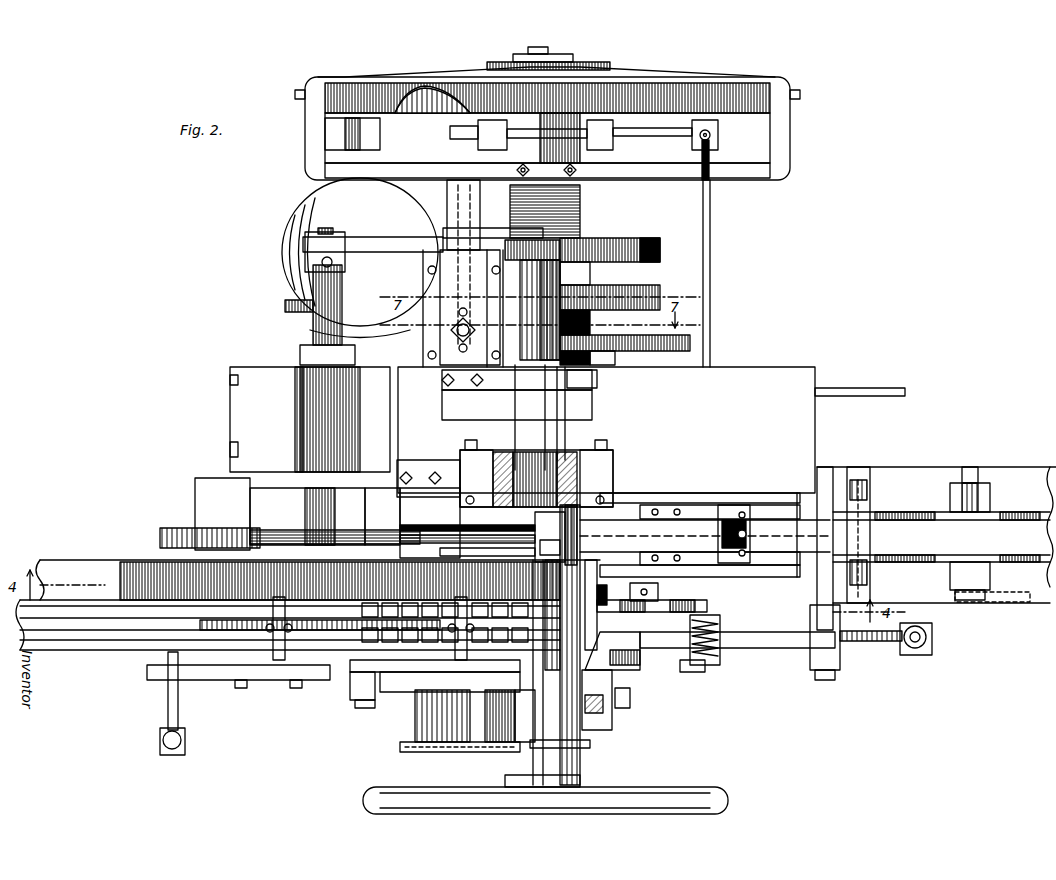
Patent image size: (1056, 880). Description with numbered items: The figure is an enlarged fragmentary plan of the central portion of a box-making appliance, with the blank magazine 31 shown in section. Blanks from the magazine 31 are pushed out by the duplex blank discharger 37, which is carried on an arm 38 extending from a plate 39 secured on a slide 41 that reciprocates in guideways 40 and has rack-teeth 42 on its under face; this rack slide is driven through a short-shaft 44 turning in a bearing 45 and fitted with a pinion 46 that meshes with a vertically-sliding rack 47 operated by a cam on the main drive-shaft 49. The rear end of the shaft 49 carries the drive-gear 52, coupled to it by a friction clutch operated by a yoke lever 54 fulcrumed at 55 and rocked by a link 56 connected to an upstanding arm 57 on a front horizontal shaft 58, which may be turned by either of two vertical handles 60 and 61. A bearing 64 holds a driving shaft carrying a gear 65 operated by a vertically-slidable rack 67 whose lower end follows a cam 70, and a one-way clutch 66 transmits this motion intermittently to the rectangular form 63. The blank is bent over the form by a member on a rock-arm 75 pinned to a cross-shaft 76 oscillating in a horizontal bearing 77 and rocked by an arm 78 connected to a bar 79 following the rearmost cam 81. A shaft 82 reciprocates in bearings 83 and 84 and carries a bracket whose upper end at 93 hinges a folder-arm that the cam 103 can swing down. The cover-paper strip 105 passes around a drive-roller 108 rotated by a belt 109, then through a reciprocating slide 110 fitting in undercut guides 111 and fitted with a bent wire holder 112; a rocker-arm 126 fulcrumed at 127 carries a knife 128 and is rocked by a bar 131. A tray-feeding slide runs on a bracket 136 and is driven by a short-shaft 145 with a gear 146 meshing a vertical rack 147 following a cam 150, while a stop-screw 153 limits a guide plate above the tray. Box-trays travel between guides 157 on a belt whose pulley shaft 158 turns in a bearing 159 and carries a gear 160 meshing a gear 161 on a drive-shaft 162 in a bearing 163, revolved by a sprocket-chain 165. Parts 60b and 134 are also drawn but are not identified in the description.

The drive-gear 52 is at (428, 108).
The fulcrum 55 is at (686, 136).
The oscillatory yoke lever 54 is at (722, 138).
The link 56 is at (712, 240).
The rack-teeth 42 is at (460, 178).
The bar 79 is at (488, 232).
The slide 41 is at (450, 220).
The arm 78 is at (384, 240).
The cross-shaft 76 is at (312, 325).
The pinion 46 is at (580, 235).
The bearing 45 is at (548, 252).
The short-shaft 44 is at (538, 310).
The rearmost cam 81 is at (640, 240).
The main drive-shaft 49 is at (590, 268).
The vertically-sliding rack 47 is at (622, 297).
The bearing 64 is at (600, 322).
The gear 65 is at (585, 333).
The one-way clutch 66 is at (600, 356).
The stud 60b is at (614, 358).
The guideways 40 is at (495, 297).
The plate 39 is at (440, 342).
The horizontal bearing 77 is at (310, 419).
The arm 38 is at (578, 385).
The belt 109 is at (880, 390).
The duplex blank discharger 37 is at (505, 421).
The vertically-slidable rack 67 is at (525, 378).
The blank magazine 31 is at (575, 460).
The pivotal mounting 93 is at (458, 530).
The bearing 83 is at (205, 520).
The shaft 82 is at (273, 535).
The bearing 84 is at (352, 516).
The rock-arm 75 is at (428, 540).
The cam 70 is at (556, 535).
The rectangular form 63 is at (548, 546).
The undercut guides 111 is at (757, 495).
The reciprocating slide 110 is at (696, 510).
The bent wire holder 112 is at (598, 543).
The blade 128 is at (600, 530).
The cover-paper strip 105 is at (936, 548).
The cam 150 is at (70, 640).
The cam 103 is at (415, 605).
The longitudinal guides 157 is at (117, 665).
The vertical handle 60 is at (185, 745).
The gear 161 is at (372, 677).
The gear 160 is at (405, 705).
The drive-shaft 162 is at (440, 748).
The bearing 159 is at (480, 748).
The shaft 158 is at (515, 752).
The bearing 163 is at (440, 720).
The drive-roller 108 is at (700, 790).
The adjustable stop-screw 153 is at (600, 592).
The sleeve 134 is at (553, 615).
The bar 131 is at (660, 592).
The rocker-arm 126 is at (666, 610).
The upstanding arm 57 is at (722, 626).
The front horizontal shaft 58 is at (768, 650).
The vertical handle 61 is at (916, 650).
The fulcrum 127 is at (700, 670).
The bracket 136 is at (650, 667).
The short-shaft 145 is at (630, 703).
The gear 146 is at (613, 718).
The vertical rack 147 is at (603, 732).
The sprocket-chain 165 is at (590, 745).